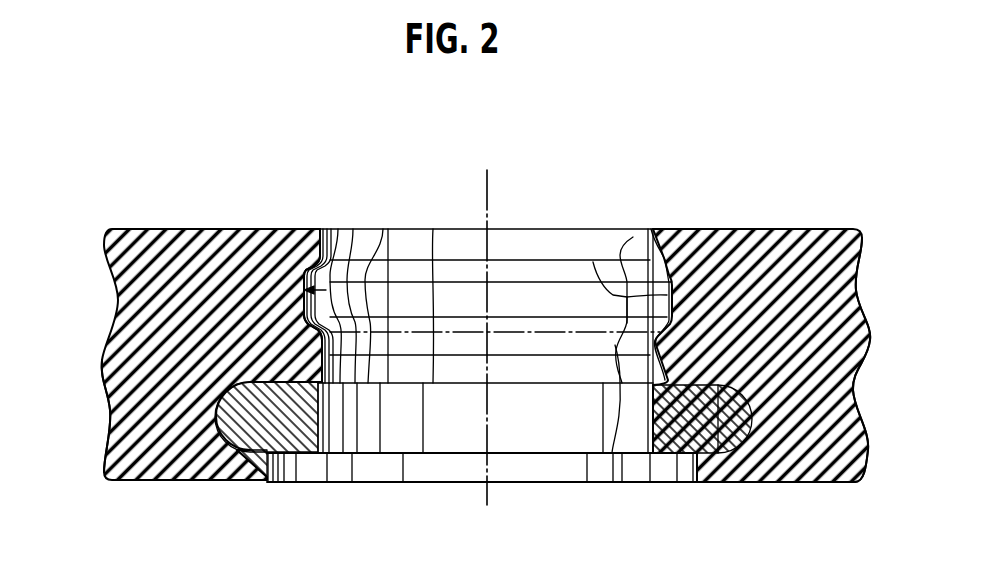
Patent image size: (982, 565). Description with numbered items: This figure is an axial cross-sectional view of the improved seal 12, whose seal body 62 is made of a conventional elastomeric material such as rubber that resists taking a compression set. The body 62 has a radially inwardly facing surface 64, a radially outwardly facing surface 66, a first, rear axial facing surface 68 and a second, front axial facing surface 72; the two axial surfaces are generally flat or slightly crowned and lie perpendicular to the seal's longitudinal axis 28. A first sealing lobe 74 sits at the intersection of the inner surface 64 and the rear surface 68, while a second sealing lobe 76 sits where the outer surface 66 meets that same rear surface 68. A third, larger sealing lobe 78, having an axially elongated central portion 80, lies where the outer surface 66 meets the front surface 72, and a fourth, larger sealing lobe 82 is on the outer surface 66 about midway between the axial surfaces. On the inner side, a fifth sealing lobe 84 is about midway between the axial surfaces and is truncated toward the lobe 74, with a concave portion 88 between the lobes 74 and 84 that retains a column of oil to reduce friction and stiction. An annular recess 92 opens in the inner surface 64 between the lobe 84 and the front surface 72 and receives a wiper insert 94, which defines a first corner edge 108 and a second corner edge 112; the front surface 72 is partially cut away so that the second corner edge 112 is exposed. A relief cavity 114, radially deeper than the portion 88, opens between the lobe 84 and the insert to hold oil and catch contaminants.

The seal 12 is at (101, 214).
The seal body 62 is at (185, 240).
The first, rear, axial facing surface 68 is at (260, 229).
The radially inwardly facing surface 64 is at (357, 229).
The relief cavity 114 is at (383, 229).
The fifth sealing lobe 84 is at (615, 345).
The concave portion of inwardly facing surface 88 is at (593, 262).
The first sealing lobe 74 is at (633, 237).
The second sealing lobe 76 is at (870, 238).
The fourth sealing lobe 82 is at (870, 334).
The axially elongated central portion 80 is at (870, 454).
The third sealing lobe 78 is at (862, 487).
The radially outwardly facing surface 66 is at (112, 412).
The second, front axial facing surface 72 is at (213, 480).
The wiper insert 94 is at (317, 413).
The longitudinal axis 28 is at (487, 498).
The first corner edge 108 is at (613, 453).
The second corner edge 112 is at (650, 453).
The annular recess 92 is at (720, 453).